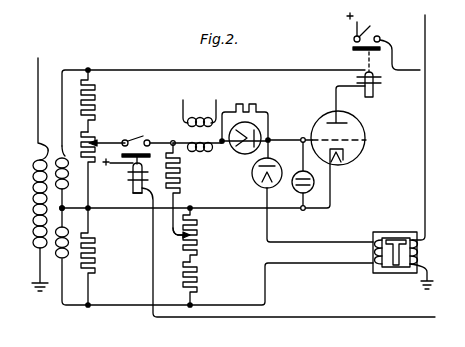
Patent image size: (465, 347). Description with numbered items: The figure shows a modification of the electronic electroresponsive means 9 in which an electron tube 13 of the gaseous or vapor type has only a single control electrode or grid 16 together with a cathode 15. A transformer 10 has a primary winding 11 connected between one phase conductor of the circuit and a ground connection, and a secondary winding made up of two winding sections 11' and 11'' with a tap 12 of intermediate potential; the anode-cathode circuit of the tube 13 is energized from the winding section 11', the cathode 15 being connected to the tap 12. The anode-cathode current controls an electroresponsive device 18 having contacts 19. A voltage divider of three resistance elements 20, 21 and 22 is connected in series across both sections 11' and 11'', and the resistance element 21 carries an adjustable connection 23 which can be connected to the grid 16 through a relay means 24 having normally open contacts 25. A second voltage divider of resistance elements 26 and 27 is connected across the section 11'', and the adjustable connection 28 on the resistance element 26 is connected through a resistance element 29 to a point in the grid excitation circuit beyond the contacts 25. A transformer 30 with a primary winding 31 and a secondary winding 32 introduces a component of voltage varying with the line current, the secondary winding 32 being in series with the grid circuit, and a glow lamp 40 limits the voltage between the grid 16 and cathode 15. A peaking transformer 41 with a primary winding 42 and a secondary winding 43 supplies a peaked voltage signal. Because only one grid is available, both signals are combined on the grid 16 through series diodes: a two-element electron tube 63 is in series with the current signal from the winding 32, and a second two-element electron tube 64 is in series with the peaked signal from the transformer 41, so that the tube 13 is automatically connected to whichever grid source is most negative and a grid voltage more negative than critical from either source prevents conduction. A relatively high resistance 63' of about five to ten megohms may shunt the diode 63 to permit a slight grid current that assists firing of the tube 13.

The electronic electroresponsive means 9 is at (306, 288).
The transformer 10 is at (38, 140).
The primary winding 11 is at (32, 225).
The secondary winding section 11' is at (74, 177).
The secondary winding section 11'' is at (74, 233).
The tap 12 is at (63, 206).
The electron tube 13 is at (321, 117).
The cathode 15 is at (346, 152).
The control electrode 16 is at (354, 139).
The electroresponsive device 18 is at (376, 85).
The contacts 19 is at (383, 41).
The resistance element 20 is at (94, 98).
The resistance element 21 is at (96, 131).
The resistance element 22 is at (100, 260).
The adjustable connection 23 is at (124, 173).
The relay means 24 is at (130, 181).
The normally open contacts 25 is at (147, 135).
The resistance element 26 is at (195, 233).
The resistance element 27 is at (196, 271).
The adjustable connection 28 is at (183, 238).
The resistance element 29 is at (181, 182).
The transformer 30 is at (178, 134).
The primary winding 31 is at (199, 111).
The secondary winding 32 is at (197, 154).
The glow lamp 40 is at (293, 190).
The peaking transformer 41 is at (395, 263).
The primary winding 42 is at (420, 252).
The secondary winding 43 is at (371, 248).
The two-element electron tube 63 is at (243, 147).
The resistance 63' is at (247, 111).
The two-element electron tube 64 is at (254, 181).